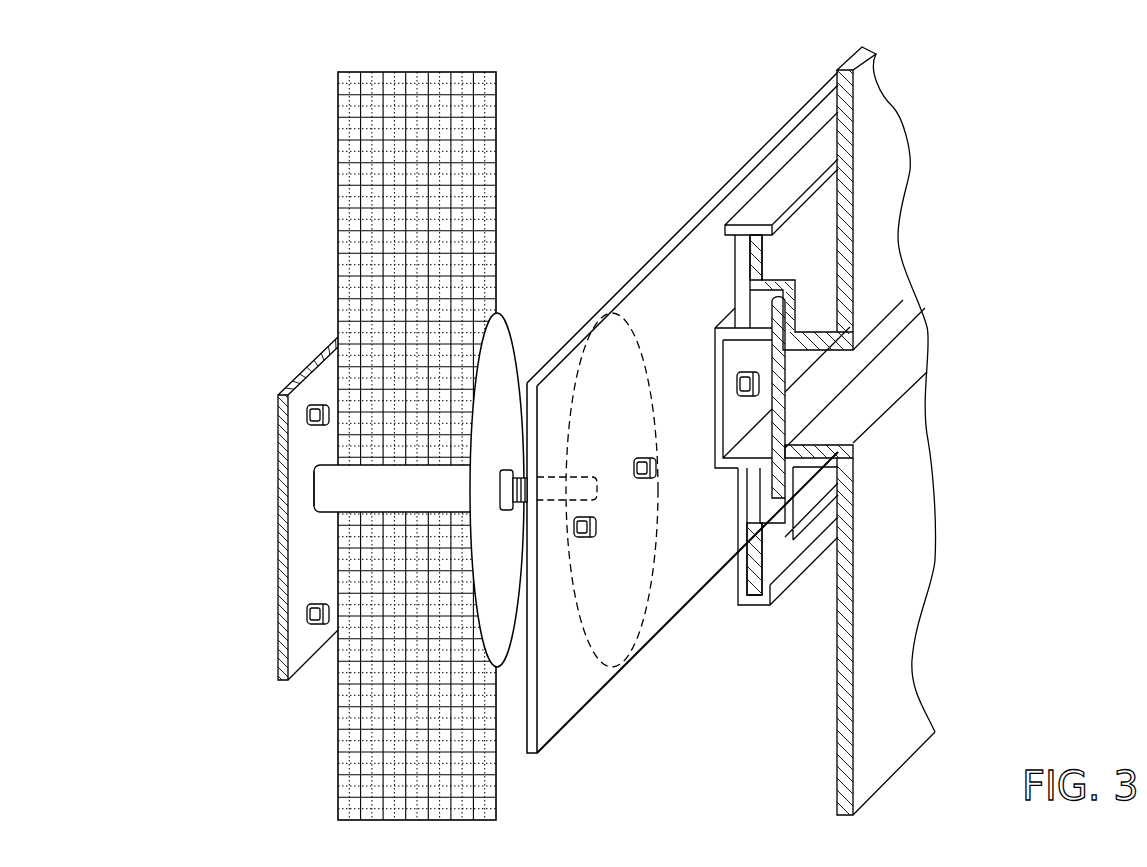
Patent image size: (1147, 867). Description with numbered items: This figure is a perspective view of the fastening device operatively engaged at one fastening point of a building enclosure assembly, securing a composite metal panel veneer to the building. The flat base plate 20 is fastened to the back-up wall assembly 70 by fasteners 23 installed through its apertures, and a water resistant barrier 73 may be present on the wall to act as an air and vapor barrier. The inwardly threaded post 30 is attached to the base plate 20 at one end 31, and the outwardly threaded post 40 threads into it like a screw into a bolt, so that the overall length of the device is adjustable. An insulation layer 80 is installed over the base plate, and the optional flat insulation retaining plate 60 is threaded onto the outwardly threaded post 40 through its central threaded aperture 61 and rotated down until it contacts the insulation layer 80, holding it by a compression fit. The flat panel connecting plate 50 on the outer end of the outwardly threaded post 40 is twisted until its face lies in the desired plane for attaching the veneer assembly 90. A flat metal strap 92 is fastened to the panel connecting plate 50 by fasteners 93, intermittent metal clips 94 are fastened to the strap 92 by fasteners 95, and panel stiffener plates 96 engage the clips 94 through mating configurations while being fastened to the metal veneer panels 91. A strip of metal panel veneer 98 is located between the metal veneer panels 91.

The back-up wall assembly 70 is at (232, 253).
The water resistant barrier 73 is at (265, 156).
The insulation layer 80 is at (338, 256).
The flat base plate 20 is at (282, 680).
The fasteners 23 is at (307, 413).
The inwardly threaded post 30 is at (325, 468).
The end of the inwardly threaded post 31 is at (313, 490).
The outwardly threaded post 40 is at (522, 505).
The flat panel connecting plate 50 is at (628, 318).
The flat insulation retaining plate 60 is at (502, 318).
The threaded aperture 61 is at (510, 470).
The veneer assembly 90 is at (750, 418).
The metal veneer panels 91 is at (895, 186).
The flat metal strap 92 is at (730, 179).
The fasteners 93 is at (646, 480).
The intermittent metal clips 94 is at (748, 606).
The fasteners 95 is at (760, 380).
The panel stiffener plates 96 is at (753, 272).
The strip of metal panel veneer 98 is at (810, 383).